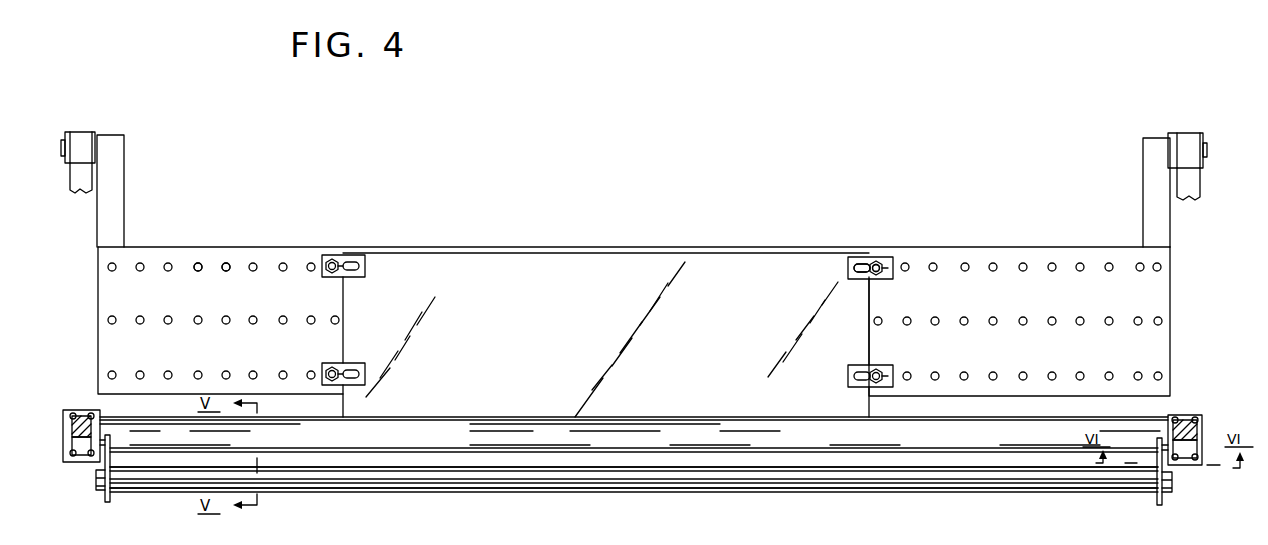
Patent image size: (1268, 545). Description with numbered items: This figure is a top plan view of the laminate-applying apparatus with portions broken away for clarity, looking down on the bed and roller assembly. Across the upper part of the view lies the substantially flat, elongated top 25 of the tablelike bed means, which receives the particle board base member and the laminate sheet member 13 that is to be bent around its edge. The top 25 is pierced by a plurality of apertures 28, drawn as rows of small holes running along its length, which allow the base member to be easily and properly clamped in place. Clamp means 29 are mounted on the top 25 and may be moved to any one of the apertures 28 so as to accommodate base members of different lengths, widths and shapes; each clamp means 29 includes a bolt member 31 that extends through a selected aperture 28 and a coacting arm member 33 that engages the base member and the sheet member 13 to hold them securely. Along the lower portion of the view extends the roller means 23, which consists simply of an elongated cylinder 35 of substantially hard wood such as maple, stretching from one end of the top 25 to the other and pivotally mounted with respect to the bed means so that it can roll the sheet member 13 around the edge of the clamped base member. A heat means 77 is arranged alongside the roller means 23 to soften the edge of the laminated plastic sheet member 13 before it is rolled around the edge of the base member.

The sheet member 13 is at (512, 370).
The roller means 23 is at (803, 440).
The top 25 is at (265, 263).
The apertures 28 is at (200, 264).
The clamp means 29 is at (329, 246).
The bolt member 31 is at (882, 262).
The arm member 33 is at (900, 266).
The elongated cylinder 35 is at (666, 443).
The heat means 77 is at (510, 480).